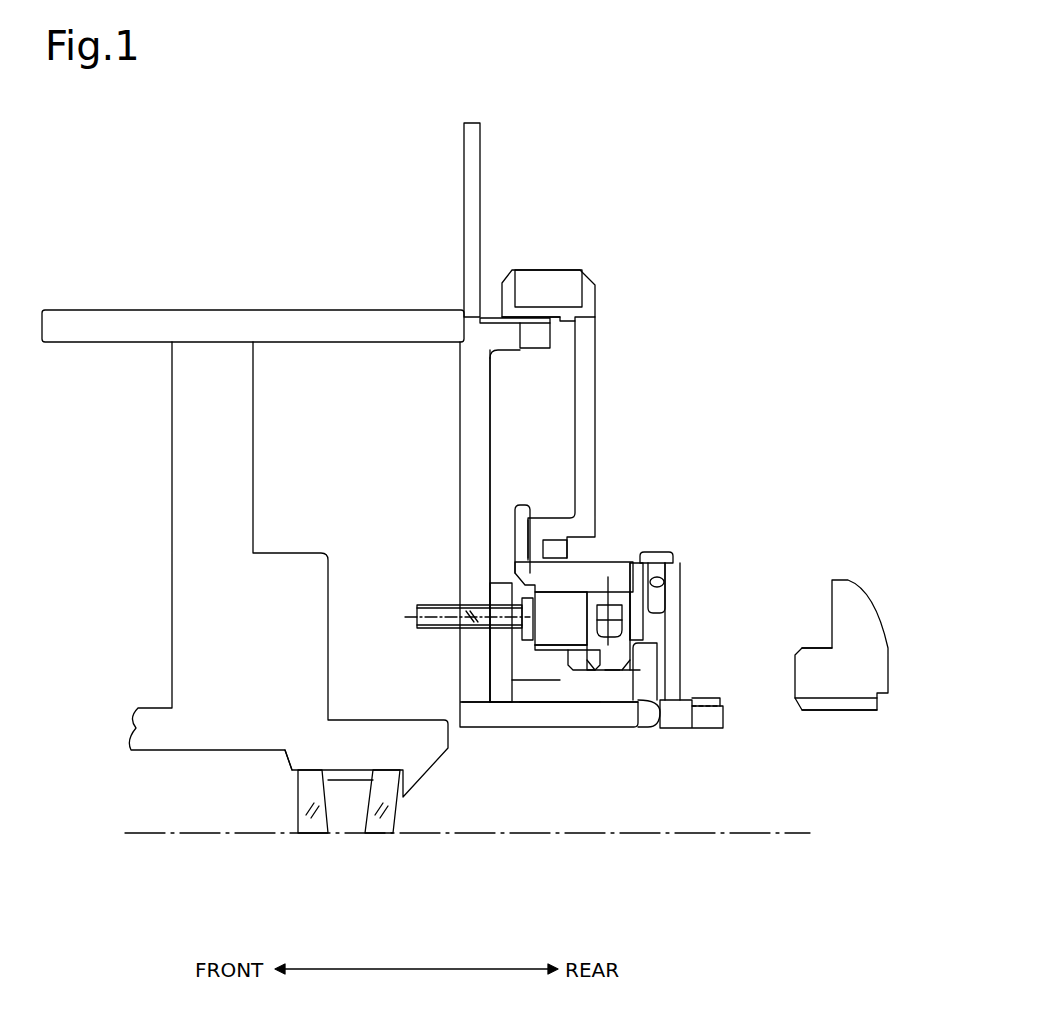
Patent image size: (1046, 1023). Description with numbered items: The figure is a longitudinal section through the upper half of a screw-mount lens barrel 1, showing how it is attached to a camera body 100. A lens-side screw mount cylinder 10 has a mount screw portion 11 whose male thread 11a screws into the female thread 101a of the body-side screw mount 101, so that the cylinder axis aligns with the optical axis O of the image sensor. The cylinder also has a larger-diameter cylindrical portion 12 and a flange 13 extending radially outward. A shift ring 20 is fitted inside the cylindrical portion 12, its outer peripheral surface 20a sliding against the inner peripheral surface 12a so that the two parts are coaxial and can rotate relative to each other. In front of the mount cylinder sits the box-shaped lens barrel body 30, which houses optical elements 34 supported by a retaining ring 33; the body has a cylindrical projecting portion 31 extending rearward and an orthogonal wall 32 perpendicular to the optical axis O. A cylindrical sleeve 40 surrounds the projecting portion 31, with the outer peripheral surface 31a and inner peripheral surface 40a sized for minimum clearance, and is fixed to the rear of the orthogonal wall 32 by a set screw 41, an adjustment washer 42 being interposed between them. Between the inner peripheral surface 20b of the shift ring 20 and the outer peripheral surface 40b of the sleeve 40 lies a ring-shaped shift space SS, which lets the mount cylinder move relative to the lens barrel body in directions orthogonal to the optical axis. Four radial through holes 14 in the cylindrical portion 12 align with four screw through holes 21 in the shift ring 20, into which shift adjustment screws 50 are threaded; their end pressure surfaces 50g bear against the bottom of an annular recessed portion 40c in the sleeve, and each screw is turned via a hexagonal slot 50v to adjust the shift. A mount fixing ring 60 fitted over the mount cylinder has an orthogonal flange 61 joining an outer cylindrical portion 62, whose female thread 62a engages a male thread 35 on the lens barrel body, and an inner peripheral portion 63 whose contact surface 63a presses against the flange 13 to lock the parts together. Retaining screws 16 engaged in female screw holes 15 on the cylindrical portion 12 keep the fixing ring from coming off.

The screw-mount lens barrel 1 is at (716, 208).
The lens-side screw mount cylinder 10 is at (670, 680).
The mount screw portion 11 is at (715, 718).
The male thread 11a is at (700, 698).
The cylindrical portion 12 is at (577, 560).
The inner peripheral surface 12a is at (553, 540).
The flange 13 is at (520, 515).
The radial through holes 14 is at (625, 560).
The female screw holes 15 is at (665, 595).
The retaining screws 16 is at (660, 552).
The shift ring 20 is at (645, 620).
The outer peripheral surface 20a is at (561, 618).
The inner peripheral surface 20b is at (522, 610).
The screw through holes 21 is at (622, 558).
The lens barrel body 30 is at (115, 330).
The cylindrical projecting portion 31 is at (587, 718).
The outer peripheral surface 31a is at (560, 693).
The orthogonal wall 32 is at (472, 685).
The retaining ring 33 is at (292, 752).
The optical elements 34 is at (312, 830).
The male thread 35 is at (518, 325).
The cylindrical sleeve 40 is at (663, 727).
The inner peripheral surface 40a is at (570, 655).
The outer peripheral surface 40b is at (535, 648).
The annular recessed portion 40c is at (628, 670).
The set screw 41 is at (417, 615).
The adjustment washer 42 is at (502, 672).
The shift adjustment screws 50 is at (640, 652).
The end pressure surfaces 50g is at (615, 660).
The hexagonal slot 50v is at (608, 560).
The mount fixing ring 60 is at (580, 312).
The orthogonal flange 61 is at (595, 340).
The outer cylindrical portion 62 is at (545, 290).
The female thread 62a is at (530, 320).
The inner peripheral portion 63 is at (535, 522).
The contact surface 63a is at (530, 535).
The camera body 100 is at (840, 600).
The body-side screw mount 101 is at (813, 665).
The female thread 101a is at (840, 707).
The shift space SS is at (537, 690).
The optical axis O is at (672, 835).